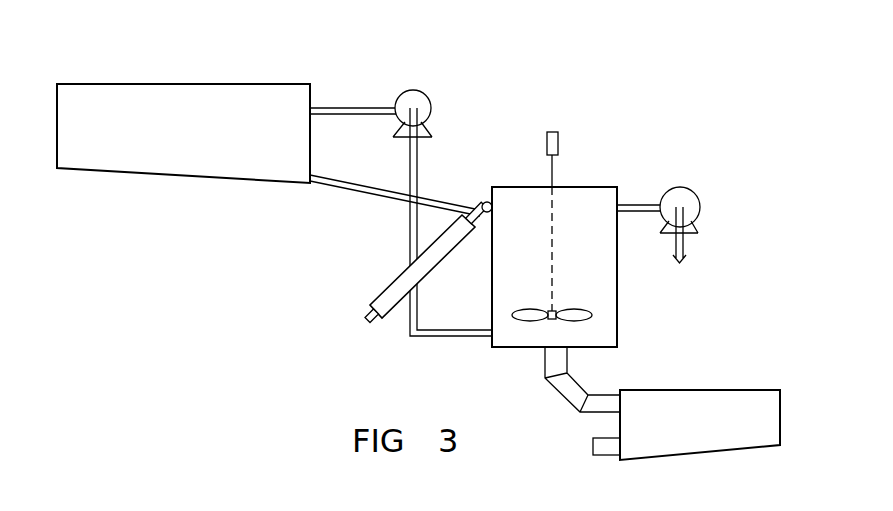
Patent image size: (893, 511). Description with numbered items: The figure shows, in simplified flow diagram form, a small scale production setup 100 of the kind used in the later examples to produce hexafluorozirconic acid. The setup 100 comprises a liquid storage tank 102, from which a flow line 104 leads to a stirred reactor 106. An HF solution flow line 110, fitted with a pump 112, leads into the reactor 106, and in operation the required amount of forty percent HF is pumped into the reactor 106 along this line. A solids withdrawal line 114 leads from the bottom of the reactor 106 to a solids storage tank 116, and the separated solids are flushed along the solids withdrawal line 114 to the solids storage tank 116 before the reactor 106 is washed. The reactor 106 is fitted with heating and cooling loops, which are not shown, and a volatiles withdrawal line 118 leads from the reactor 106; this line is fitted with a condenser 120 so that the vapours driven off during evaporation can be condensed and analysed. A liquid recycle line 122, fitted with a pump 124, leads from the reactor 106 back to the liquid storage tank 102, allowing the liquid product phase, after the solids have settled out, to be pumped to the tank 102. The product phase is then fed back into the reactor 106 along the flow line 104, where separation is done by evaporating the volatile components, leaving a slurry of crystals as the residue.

The small scale production setup 100 is at (618, 80).
The liquid storage tank 102 is at (218, 150).
The flow line 104 is at (352, 185).
The stirred reactor 106 is at (612, 275).
The HF solution flow line 110 is at (639, 204).
The pump 112 is at (690, 202).
The solids withdrawal line 114 is at (570, 390).
The solids storage tank 116 is at (710, 408).
The volatiles withdrawal line 118 is at (480, 205).
The condenser 120 is at (398, 292).
The liquid recycle line 122 is at (372, 106).
The pump 124 is at (420, 100).